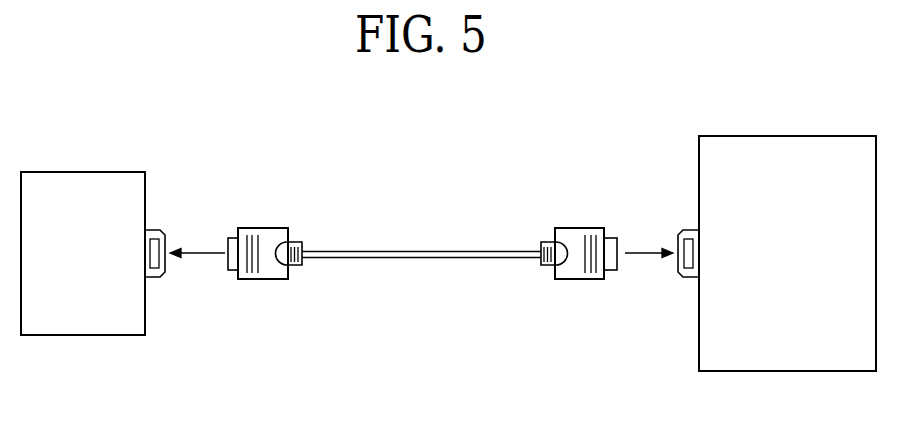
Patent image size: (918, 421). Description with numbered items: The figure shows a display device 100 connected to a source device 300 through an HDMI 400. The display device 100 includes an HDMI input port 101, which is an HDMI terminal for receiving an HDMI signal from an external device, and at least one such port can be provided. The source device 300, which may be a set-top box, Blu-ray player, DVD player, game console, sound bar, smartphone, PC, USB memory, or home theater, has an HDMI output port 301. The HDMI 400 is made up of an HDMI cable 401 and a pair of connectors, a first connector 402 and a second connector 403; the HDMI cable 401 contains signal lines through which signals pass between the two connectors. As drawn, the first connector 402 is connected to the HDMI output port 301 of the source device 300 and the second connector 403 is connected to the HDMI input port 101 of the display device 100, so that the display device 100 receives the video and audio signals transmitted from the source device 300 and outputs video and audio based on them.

The display device 100 is at (790, 136).
The HDMI input port 101 is at (689, 229).
The source device 300 is at (82, 171).
The HDMI output port 301 is at (154, 230).
The HDMI 400 is at (422, 192).
The HDMI cable 401 is at (483, 250).
The first connector 402 is at (266, 228).
The second connector 403 is at (581, 228).